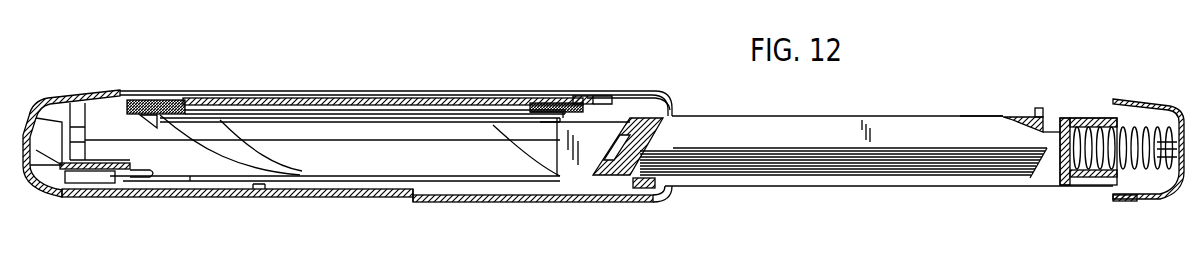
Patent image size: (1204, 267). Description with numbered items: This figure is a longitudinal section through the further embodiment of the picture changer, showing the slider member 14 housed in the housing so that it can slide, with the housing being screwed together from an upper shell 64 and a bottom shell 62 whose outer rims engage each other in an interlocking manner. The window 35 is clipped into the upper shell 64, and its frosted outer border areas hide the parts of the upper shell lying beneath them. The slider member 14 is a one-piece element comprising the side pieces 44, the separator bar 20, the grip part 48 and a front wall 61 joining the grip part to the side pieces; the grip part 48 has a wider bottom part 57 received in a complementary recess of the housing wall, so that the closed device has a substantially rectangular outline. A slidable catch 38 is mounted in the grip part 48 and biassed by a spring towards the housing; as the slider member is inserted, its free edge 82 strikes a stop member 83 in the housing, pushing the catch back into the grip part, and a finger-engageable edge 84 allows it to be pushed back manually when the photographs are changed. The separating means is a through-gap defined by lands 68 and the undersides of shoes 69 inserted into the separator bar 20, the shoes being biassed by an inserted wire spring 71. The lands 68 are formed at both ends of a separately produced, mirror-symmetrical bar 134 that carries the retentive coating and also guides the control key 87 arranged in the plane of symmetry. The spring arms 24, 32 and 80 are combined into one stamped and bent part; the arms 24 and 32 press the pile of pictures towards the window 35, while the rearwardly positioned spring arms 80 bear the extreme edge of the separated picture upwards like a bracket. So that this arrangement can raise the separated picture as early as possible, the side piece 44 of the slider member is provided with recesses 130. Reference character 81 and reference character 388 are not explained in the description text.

The slider member 14 is at (786, 113).
The separator bar 20 is at (668, 122).
The spring arms 24 is at (199, 158).
The spring arms 32 is at (213, 156).
The window 35 is at (366, 98).
The slidable catch 38 is at (1068, 117).
The side pieces 44 is at (868, 128).
The grip part 48 is at (1116, 101).
The bottom part 57 is at (1118, 200).
The front wall 61 is at (1184, 112).
The bottom shell 62 is at (106, 199).
The upper shell 64 is at (88, 96).
The lands 68 is at (150, 184).
The shoes 69 is at (580, 144).
The wire spring 71 is at (641, 118).
The spring arms 80 is at (279, 145).
The retaining block 81 is at (549, 98).
The free edge 82 is at (1005, 117).
The stop member 83 is at (600, 97).
The finger-engageable edge 84 is at (1040, 117).
The control key 87 is at (62, 129).
The recesses 130 is at (525, 150).
The bar 134 is at (428, 182).
The latch block 388 is at (576, 96).